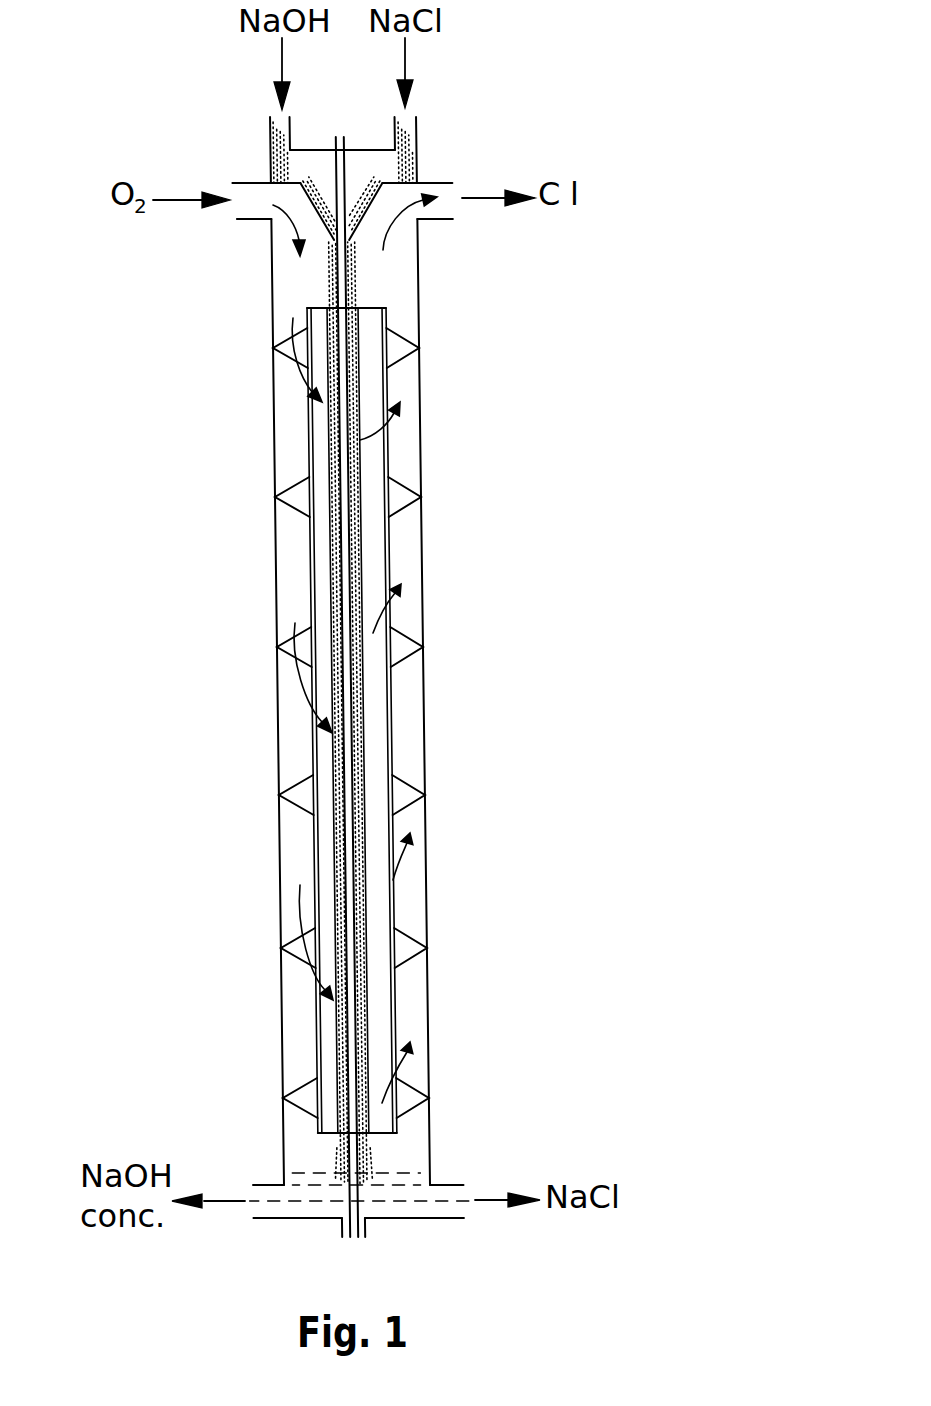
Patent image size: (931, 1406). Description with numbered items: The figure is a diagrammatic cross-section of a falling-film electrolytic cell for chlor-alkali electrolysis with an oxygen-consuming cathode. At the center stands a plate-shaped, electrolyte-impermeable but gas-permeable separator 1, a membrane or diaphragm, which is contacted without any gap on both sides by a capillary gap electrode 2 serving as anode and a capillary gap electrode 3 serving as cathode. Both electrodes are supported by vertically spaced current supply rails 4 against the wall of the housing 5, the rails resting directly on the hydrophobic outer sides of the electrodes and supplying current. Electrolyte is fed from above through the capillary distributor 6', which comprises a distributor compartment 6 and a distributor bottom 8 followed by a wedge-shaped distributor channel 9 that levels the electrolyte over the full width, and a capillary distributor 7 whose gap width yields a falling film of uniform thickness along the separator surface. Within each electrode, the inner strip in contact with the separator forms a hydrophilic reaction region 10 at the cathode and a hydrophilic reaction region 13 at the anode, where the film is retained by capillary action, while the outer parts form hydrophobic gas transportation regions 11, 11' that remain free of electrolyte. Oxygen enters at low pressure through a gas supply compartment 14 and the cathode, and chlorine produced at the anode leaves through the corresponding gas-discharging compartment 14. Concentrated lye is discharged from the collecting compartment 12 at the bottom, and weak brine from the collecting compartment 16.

The separator 1 is at (370, 572).
The capillary gap electrode (anode) 2 is at (372, 700).
The capillary gap electrode (cathode) 3 is at (323, 603).
The current supply rails 4 is at (395, 778).
The housing 5 is at (275, 732).
The distributor compartment 6 is at (217, 145).
The capillary distributor 6' is at (424, 125).
The capillary distributor 7 is at (348, 248).
The distributor bottom 8 is at (418, 165).
The wedge-shaped distributor channel 9 is at (364, 214).
The hydrophilic reaction region 10 is at (330, 412).
The hydrophobic gas transportation region 11 is at (211, 602).
The hydrophobic gas transportation region 11' is at (487, 648).
The collecting compartment 12 is at (308, 1205).
The hydrophilic reaction region 13 is at (360, 977).
The gas supply compartment / gas-discharging compartment 14 is at (297, 562).
The collecting compartment 16 is at (433, 1202).